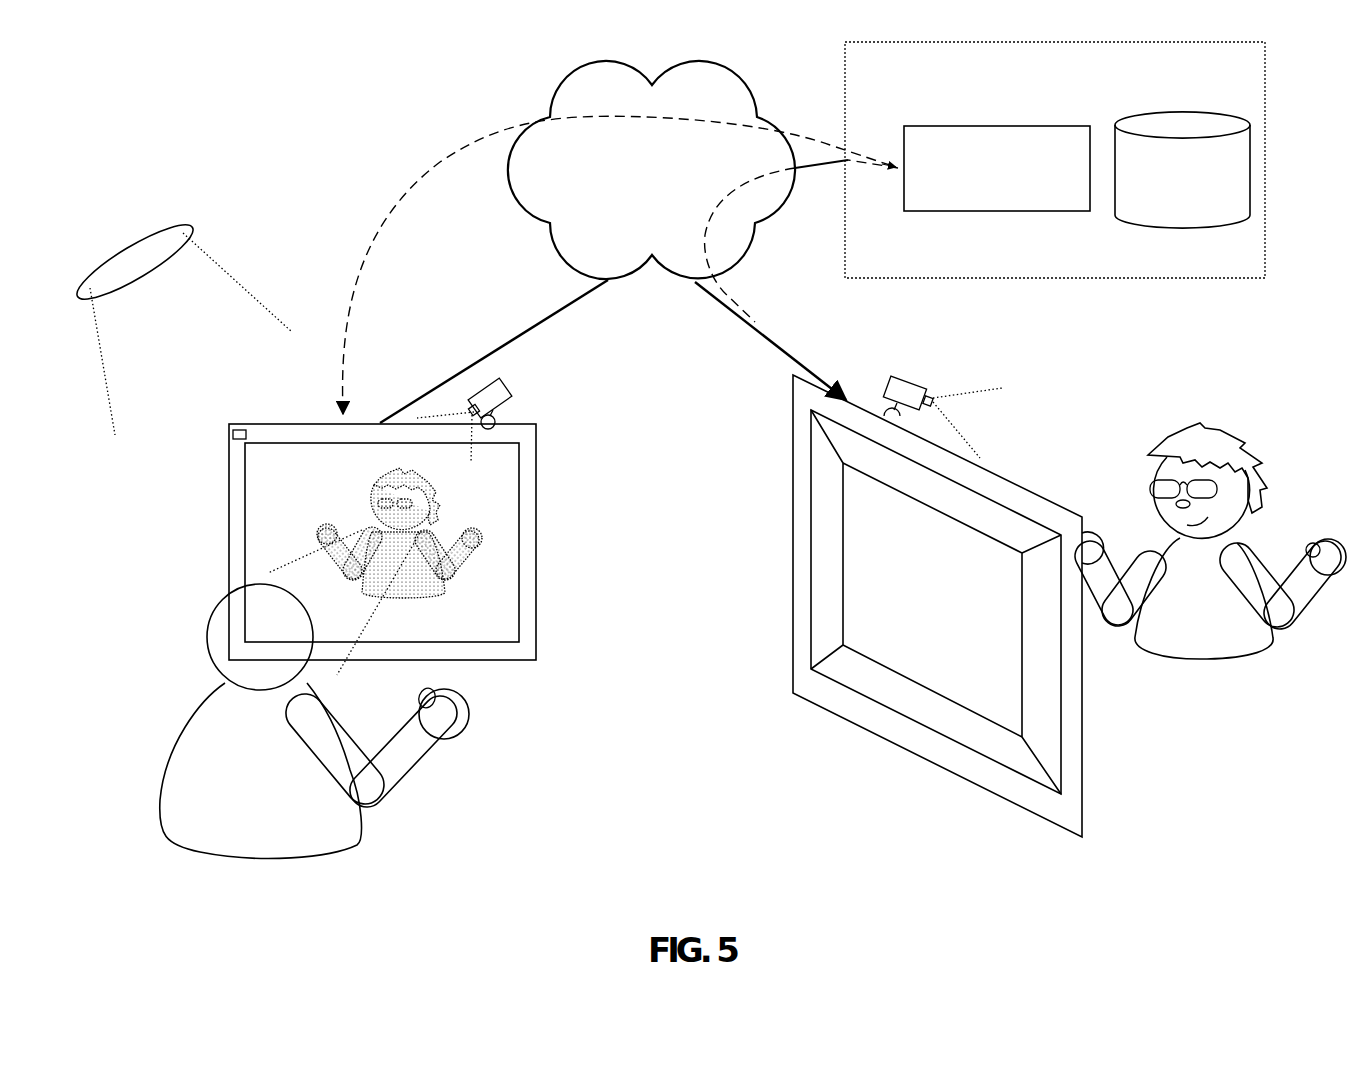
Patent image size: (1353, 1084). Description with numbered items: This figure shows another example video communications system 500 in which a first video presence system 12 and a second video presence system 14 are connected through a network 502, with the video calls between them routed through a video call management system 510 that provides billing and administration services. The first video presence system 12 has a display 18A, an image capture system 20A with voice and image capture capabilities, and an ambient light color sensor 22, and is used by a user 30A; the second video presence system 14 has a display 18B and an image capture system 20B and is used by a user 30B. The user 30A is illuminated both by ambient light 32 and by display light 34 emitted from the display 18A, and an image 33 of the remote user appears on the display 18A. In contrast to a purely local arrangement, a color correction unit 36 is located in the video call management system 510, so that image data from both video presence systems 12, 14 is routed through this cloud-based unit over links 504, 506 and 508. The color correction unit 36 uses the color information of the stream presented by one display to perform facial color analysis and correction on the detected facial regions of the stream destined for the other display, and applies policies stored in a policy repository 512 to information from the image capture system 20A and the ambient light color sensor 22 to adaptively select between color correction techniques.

The video call system 500 is at (138, 176).
The network 502 is at (670, 196).
The color correction information transmission 504 is at (518, 137).
The video stream transmission 506 is at (542, 318).
The color correction transmission 508 is at (830, 165).
The video call management system 510 is at (1055, 160).
The policy repository 512 is at (1207, 192).
The color correction unit 36 is at (993, 211).
The first video presence system 12 is at (415, 531).
The second video presence system 14 is at (979, 620).
The display 18A is at (527, 482).
The display 18B is at (1017, 502).
The image capture system 20A is at (512, 402).
The image capture system 20B is at (879, 380).
The ambient light color sensor 22 is at (230, 425).
The user 30A is at (203, 692).
The user 30B is at (1187, 658).
The ambient light 32 is at (225, 285).
The displayed image of second user 33 is at (375, 570).
The display light 34 is at (352, 606).